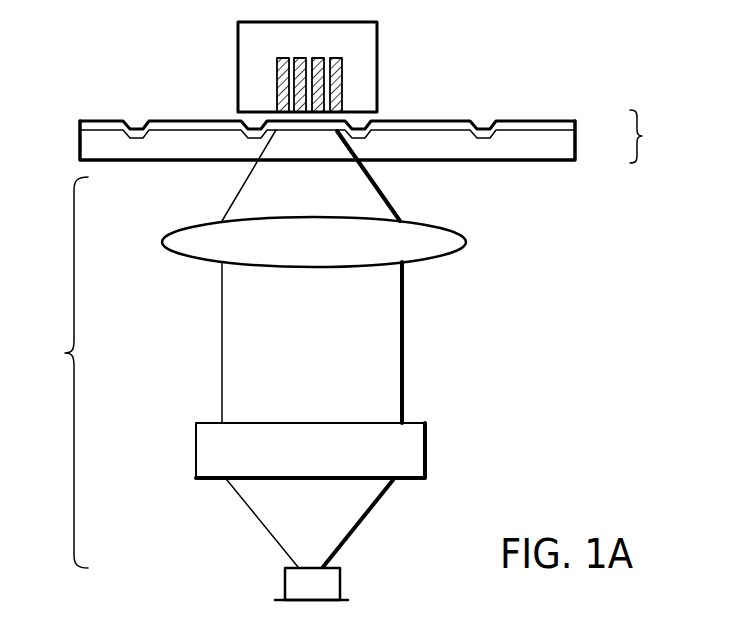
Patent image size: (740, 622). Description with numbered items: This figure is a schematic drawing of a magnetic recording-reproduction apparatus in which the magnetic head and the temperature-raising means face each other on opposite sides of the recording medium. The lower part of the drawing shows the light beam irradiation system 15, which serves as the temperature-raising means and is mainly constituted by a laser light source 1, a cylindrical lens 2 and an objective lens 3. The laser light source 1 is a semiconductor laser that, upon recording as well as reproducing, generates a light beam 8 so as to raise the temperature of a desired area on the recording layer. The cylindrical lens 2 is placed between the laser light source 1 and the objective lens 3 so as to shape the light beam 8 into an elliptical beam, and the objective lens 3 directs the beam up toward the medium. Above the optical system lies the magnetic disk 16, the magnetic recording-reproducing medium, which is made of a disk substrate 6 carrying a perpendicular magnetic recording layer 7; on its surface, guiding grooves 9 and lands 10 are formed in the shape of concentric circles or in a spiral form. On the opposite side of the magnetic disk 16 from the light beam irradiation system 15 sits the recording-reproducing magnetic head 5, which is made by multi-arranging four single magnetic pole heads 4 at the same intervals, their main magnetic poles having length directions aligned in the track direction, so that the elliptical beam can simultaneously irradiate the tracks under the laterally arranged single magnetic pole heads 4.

The laser light source 1 is at (340, 583).
The cylindrical lens 2 is at (427, 452).
The objective lens 3 is at (450, 237).
The single magnetic pole heads 4 is at (343, 82).
The recording-reproducing magnetic head 5 is at (238, 46).
The disk substrate 6 is at (577, 150).
The perpendicular magnetic recording layer 7 is at (577, 125).
The light beam 8 is at (368, 202).
The guiding grooves 9 is at (253, 126).
The lands 10 is at (296, 133).
The light beam irradiation system 15 is at (59, 372).
The magnetic disk 16 is at (652, 136).